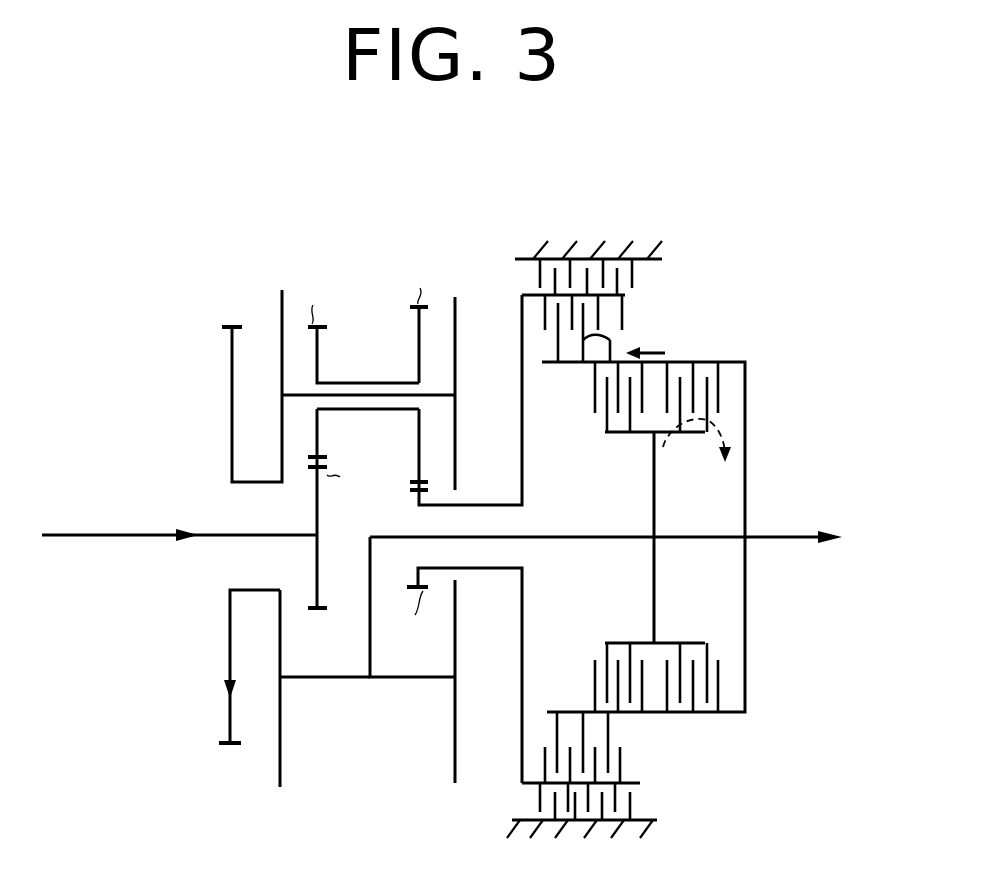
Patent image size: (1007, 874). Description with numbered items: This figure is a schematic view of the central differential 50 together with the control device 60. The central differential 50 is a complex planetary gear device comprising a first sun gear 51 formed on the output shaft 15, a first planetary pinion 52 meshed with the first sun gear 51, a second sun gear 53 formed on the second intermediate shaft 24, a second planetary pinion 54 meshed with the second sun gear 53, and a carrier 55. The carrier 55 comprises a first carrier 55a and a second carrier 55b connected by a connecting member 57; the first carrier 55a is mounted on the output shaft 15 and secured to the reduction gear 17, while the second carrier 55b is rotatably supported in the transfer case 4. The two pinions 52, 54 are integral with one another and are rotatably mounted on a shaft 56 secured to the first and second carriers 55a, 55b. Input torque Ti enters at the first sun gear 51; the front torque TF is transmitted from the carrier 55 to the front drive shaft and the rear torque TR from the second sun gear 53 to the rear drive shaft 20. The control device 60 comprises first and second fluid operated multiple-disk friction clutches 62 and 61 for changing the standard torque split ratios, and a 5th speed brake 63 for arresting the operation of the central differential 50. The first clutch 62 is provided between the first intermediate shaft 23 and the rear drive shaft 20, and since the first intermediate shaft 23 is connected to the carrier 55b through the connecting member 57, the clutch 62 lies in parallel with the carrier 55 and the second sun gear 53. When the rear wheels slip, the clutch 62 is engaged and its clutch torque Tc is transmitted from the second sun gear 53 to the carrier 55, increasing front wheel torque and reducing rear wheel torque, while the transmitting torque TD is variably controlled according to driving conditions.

The transfer case 4 is at (588, 255).
The output shaft 15 is at (247, 534).
The reduction gear 17 is at (232, 324).
The rear drive shaft 20 is at (793, 534).
The first intermediate shaft 23 is at (605, 535).
The second intermediate shaft 24 is at (510, 509).
The central differential 50 is at (362, 258).
The first sun gear 51 is at (313, 613).
The first planetary pinion 52 is at (318, 350).
The second sun gear 53 is at (413, 584).
The second planetary pinion 54 is at (418, 322).
The carrier 55 is at (360, 684).
The first carrier 55a is at (280, 754).
The second carrier 55b is at (453, 740).
The shaft 56 is at (440, 393).
The connecting member 57 is at (318, 682).
The control device 60 is at (722, 298).
The second fluid operated multiple-disk friction clutch 61 is at (610, 338).
The first fluid operated multiple-disk friction clutch 62 is at (675, 383).
The 5th speed brake 63 is at (618, 273).